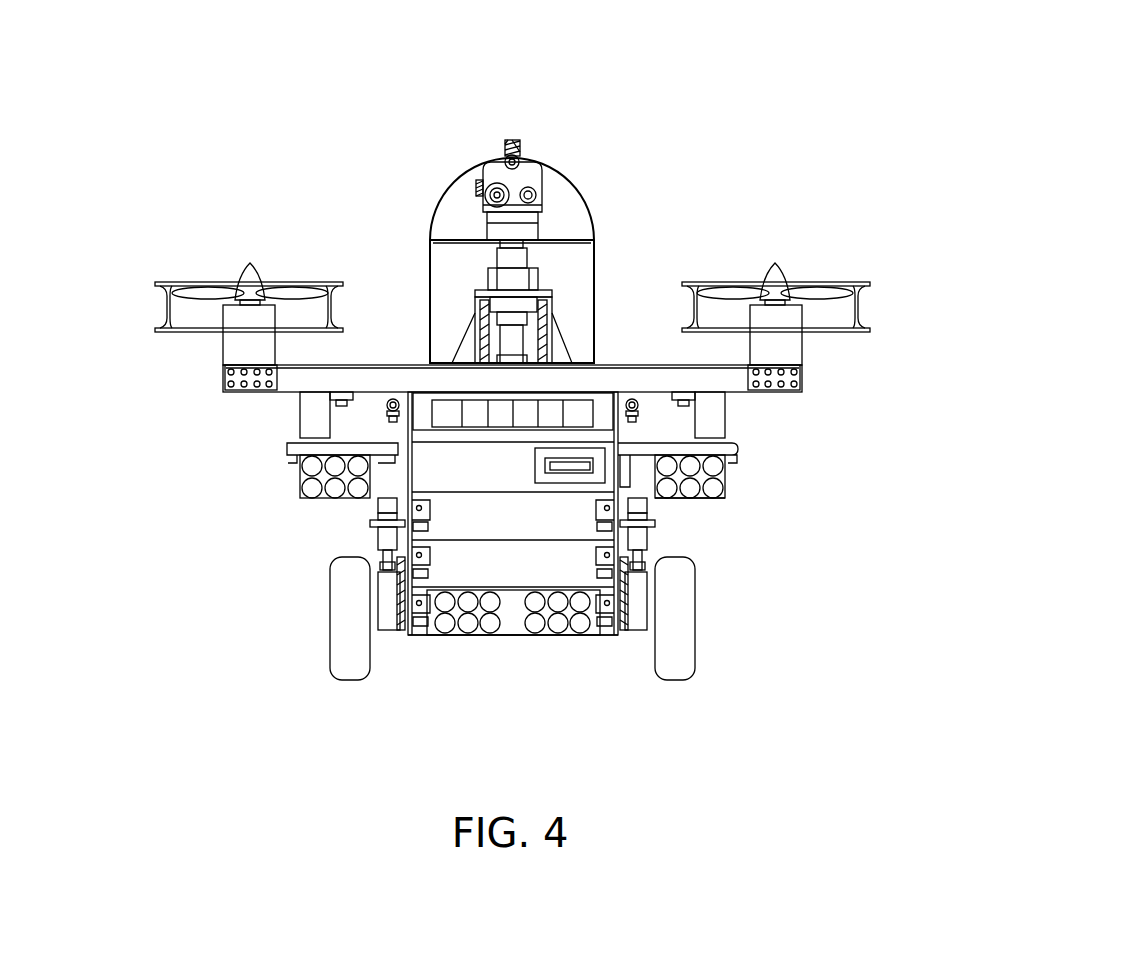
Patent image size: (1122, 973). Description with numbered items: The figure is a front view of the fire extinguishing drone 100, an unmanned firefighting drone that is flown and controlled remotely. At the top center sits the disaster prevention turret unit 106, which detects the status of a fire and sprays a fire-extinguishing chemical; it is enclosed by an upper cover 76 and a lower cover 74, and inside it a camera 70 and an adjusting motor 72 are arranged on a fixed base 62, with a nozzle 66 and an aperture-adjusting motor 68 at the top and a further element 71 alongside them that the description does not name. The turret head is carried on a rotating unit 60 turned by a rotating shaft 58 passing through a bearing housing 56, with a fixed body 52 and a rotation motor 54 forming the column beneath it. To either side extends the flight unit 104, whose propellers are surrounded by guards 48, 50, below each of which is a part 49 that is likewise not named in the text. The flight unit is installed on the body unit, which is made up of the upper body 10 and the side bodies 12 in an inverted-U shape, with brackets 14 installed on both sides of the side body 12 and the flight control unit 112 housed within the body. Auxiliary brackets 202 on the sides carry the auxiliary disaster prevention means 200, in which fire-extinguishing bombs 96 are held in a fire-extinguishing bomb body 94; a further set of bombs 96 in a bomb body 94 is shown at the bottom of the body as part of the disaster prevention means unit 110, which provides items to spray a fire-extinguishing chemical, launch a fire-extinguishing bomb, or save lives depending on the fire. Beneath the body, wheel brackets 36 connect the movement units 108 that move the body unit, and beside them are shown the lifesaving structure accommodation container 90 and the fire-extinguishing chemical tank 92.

The fire extinguishing drone 100 is at (712, 112).
The disaster prevention turret unit 106 is at (614, 213).
The flight unit 104 is at (276, 406).
The upper cover 76 is at (445, 212).
The lower cover 74 is at (433, 262).
The fixed base 62 is at (532, 176).
The adjusting motor 72 is at (475, 167).
The camera 70 is at (480, 193).
The secondary sensor 71 is at (537, 198).
The nozzle 66 is at (514, 160).
The aperture-adjusting motor 68 is at (510, 142).
The rotating unit 60 is at (532, 217).
The rotating shaft 58 is at (522, 256).
The bearing housing 56 is at (535, 274).
The fixed body 52 is at (476, 309).
The rotation motor 54 is at (522, 338).
The guard 50 is at (165, 310).
The guard 48 is at (200, 290).
The motor housing 49 is at (250, 348).
The bracket 14 is at (332, 430).
The upper body 10 is at (432, 392).
The side body 12 is at (612, 392).
The flight control unit 112 is at (606, 480).
The auxiliary bracket 202 is at (287, 456).
The fire-extinguishing bomb 96 is at (300, 470).
The fire-extinguishing bomb body 94 is at (312, 490).
The wheel bracket 36 is at (378, 525).
The lifesaving structure accommodation container 90 is at (385, 565).
The fire-extinguishing chemical tank 92 is at (383, 595).
The movement unit 108 is at (404, 652).
The disaster prevention means unit 110 is at (519, 658).
The auxiliary disaster prevention means 200 is at (735, 512).